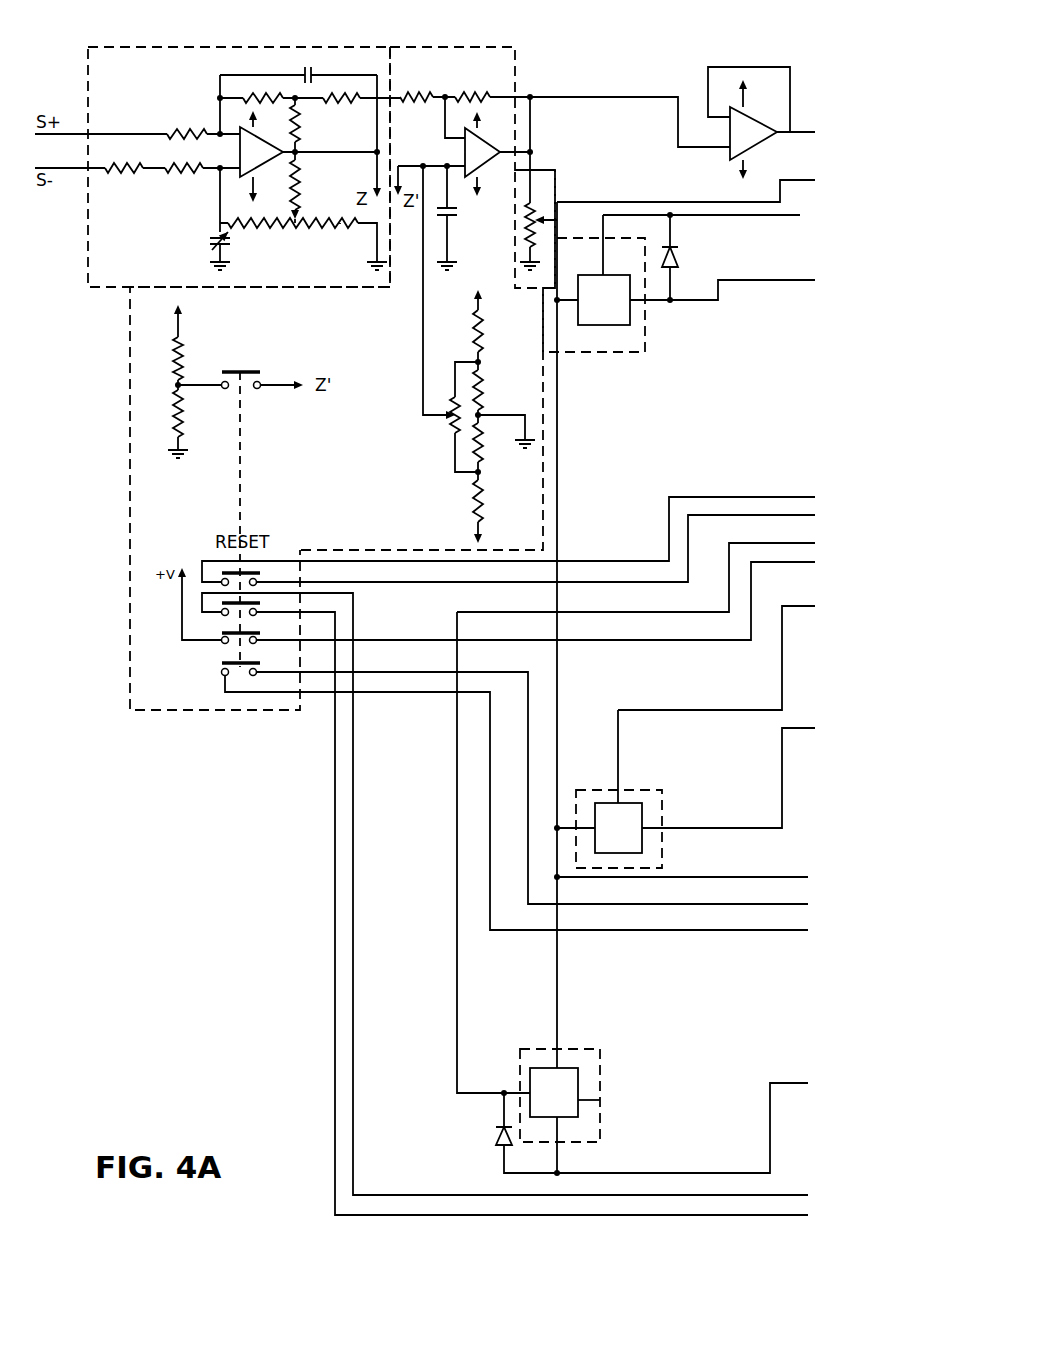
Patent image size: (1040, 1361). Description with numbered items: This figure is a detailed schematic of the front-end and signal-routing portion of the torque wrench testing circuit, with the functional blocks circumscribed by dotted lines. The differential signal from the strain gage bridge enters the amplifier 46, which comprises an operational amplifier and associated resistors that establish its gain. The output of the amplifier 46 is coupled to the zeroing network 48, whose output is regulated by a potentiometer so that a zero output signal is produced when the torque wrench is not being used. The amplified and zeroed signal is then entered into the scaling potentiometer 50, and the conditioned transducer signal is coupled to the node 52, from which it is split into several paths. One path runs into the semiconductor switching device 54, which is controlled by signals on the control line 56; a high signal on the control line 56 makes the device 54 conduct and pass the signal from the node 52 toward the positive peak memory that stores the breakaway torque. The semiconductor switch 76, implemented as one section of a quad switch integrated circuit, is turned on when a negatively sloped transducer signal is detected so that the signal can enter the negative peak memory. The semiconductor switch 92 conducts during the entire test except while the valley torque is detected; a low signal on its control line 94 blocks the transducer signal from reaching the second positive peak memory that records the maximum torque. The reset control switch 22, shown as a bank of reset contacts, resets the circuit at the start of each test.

The amplifier 46 is at (105, 66).
The reset control switch 22 is at (132, 493).
The zeroing network 48 is at (545, 398).
The scaling potentiometer 50 is at (547, 185).
The node 52 is at (560, 282).
The semiconductor switching device 54 is at (640, 343).
The control line 56 is at (804, 218).
The semiconductor switch 76 is at (648, 790).
The semiconductor switch 92 is at (598, 1062).
The control line 94 is at (450, 1012).